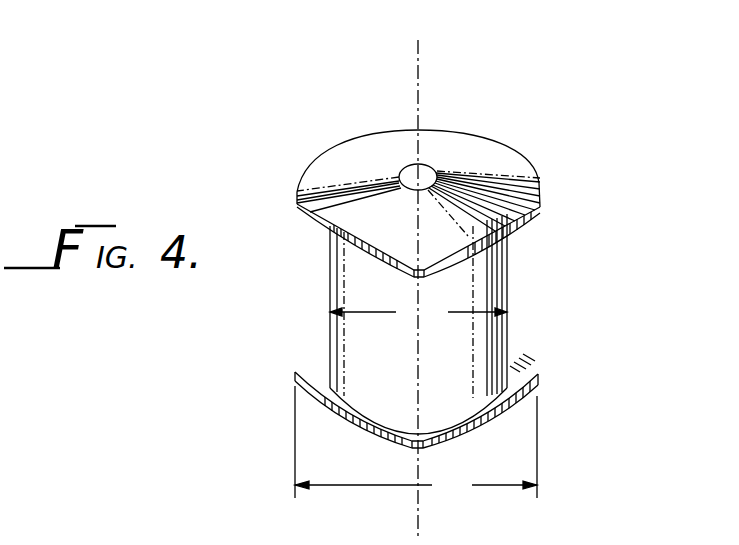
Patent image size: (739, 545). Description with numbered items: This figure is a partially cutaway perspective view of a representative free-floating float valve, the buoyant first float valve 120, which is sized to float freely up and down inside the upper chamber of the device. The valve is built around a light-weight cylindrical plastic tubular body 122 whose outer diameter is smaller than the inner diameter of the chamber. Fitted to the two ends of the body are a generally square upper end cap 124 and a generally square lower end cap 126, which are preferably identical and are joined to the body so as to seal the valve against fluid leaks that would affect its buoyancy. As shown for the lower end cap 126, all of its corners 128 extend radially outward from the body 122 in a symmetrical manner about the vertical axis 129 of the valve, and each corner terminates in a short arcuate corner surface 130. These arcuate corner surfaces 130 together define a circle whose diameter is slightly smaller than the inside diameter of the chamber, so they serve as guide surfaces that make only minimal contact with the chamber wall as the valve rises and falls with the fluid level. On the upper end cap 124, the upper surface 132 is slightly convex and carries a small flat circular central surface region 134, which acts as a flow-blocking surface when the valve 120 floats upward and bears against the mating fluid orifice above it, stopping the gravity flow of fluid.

The first float valve 120 is at (424, 288).
The tubular body 122 is at (506, 259).
The upper end cap 124 is at (460, 188).
The lower end cap 126 is at (426, 396).
The corners 128 is at (315, 358).
The vertical axis 129 is at (420, 79).
The arcuate corner surfaces 130 is at (297, 200).
The upper surface 132 is at (505, 149).
The flat circular central surface region 134 is at (422, 166).